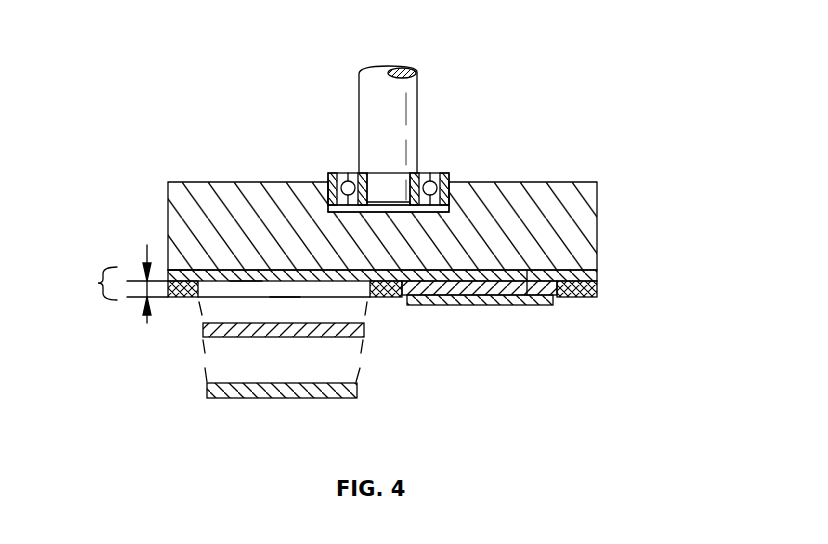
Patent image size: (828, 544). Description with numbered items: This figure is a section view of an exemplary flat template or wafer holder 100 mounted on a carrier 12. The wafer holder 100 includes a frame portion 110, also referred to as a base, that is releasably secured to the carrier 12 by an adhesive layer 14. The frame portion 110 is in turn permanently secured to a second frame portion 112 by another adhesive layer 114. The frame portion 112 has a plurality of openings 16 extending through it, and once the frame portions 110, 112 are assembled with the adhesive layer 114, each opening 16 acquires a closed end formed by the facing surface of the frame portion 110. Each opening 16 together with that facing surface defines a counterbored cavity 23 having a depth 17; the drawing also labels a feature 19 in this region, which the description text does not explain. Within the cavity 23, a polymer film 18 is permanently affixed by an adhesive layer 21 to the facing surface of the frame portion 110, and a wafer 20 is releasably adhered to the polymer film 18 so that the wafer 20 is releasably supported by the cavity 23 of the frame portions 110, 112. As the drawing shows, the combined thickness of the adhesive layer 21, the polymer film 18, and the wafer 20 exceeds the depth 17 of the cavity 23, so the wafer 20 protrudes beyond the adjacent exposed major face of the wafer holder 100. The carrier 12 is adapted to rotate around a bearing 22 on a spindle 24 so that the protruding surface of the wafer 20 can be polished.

The carrier 12 is at (588, 213).
The adhesive layer 14 is at (523, 295).
The opening 16 is at (218, 287).
The depth 17 is at (140, 282).
The polymer film 18 is at (363, 330).
The gap 19 is at (234, 273).
The wafer 20 is at (207, 388).
The adhesive layer 21 is at (332, 321).
The bearing 22 is at (436, 178).
The cavity 23 is at (280, 288).
The spindle 24 is at (398, 102).
The wafer holder 100 is at (98, 283).
The frame portion 110 is at (598, 277).
The frame portion 112 is at (600, 287).
The adhesive layer 114 is at (188, 272).